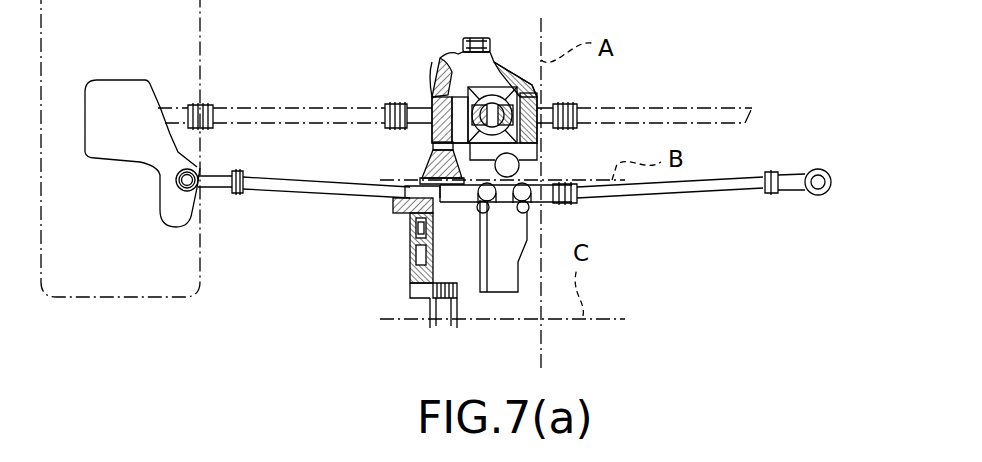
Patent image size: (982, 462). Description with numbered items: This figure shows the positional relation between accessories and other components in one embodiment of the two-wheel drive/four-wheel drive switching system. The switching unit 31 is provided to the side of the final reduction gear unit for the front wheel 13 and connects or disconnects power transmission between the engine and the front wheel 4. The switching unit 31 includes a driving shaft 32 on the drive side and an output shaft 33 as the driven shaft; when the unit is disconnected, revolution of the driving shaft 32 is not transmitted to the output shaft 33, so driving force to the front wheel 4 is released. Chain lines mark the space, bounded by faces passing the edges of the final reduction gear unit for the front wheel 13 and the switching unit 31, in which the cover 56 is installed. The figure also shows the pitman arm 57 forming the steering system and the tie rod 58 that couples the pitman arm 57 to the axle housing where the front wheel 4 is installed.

The front wheel 4 is at (122, 296).
The final reduction gear unit for the front wheel 13 is at (430, 68).
The switching unit 31 is at (408, 237).
The driving shaft 32 is at (432, 326).
The output shaft 33 is at (430, 146).
The cover 56 is at (500, 272).
The pitman arm 57 is at (520, 166).
The tie rod 58 is at (270, 204).